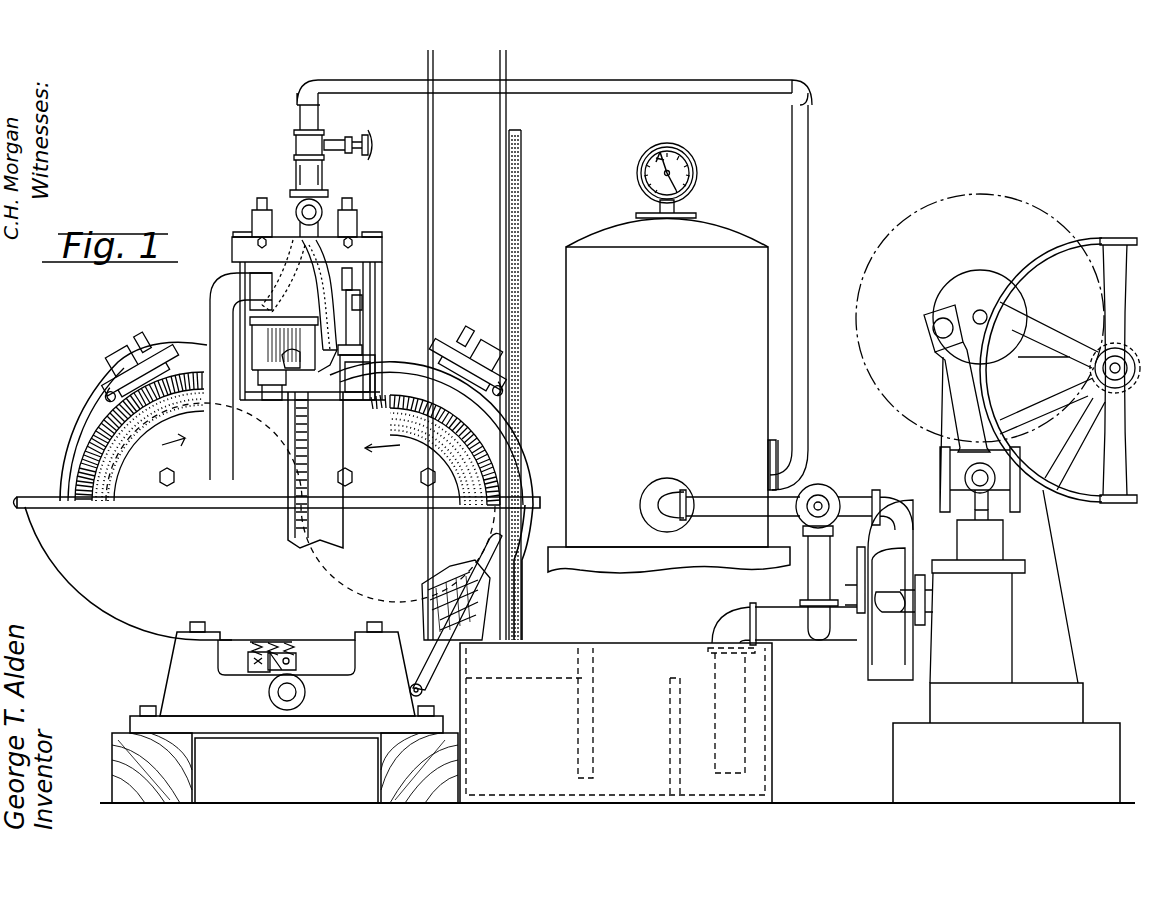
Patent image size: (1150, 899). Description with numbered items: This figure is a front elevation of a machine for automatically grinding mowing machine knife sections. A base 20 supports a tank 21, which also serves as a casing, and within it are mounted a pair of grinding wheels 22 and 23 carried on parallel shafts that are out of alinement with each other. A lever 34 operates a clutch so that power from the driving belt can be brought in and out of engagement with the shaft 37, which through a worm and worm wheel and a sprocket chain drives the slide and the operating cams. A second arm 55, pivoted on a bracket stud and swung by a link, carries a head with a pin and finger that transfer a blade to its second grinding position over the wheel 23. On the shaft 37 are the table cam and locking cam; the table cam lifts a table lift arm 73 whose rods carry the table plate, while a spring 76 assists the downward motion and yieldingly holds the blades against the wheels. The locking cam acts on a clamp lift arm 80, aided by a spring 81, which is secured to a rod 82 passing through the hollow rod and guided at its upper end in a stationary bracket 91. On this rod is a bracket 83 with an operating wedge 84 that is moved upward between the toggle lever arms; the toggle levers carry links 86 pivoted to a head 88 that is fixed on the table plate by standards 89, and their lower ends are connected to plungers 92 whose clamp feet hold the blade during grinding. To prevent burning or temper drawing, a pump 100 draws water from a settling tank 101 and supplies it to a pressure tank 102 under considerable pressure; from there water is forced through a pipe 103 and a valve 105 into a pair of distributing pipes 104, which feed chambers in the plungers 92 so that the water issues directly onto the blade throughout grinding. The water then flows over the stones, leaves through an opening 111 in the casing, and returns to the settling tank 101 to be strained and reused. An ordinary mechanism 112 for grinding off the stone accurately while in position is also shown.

The base 20 is at (178, 668).
The tank 21 is at (130, 612).
The grinding wheel 22 is at (118, 462).
The grinding wheel 23 is at (473, 500).
The lever 34 is at (435, 680).
The shaft 37 is at (305, 692).
The second arm 55 is at (278, 418).
The table lift arm 73 is at (258, 660).
The spring 76 is at (255, 645).
The clamp lift arm 80 is at (296, 660).
The spring 81 is at (290, 643).
The rod 82 is at (248, 270).
The bracket 83 is at (301, 363).
The operating wedge 84 is at (350, 296).
The links 86 is at (360, 330).
The head 88 is at (283, 235).
The standards 89 is at (362, 296).
The stationary bracket 91 is at (210, 308).
The plungers 92 is at (375, 345).
The pump 100 is at (992, 498).
The settling tank 101 is at (660, 643).
The pressure tank 102 is at (752, 390).
The pipe 103 is at (800, 170).
The distributing pipes 104 is at (310, 255).
The valve 105 is at (372, 160).
The opening 111 is at (487, 610).
The stone grinding-off mechanism 112 is at (125, 352).